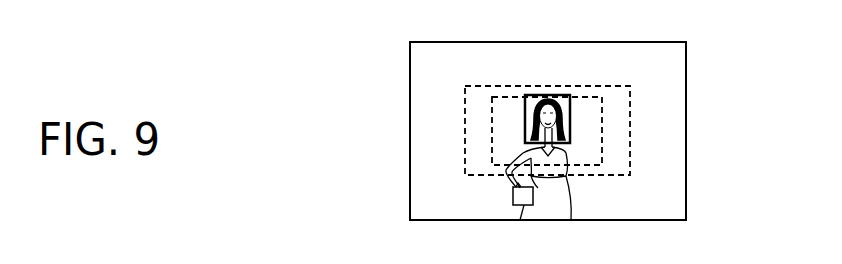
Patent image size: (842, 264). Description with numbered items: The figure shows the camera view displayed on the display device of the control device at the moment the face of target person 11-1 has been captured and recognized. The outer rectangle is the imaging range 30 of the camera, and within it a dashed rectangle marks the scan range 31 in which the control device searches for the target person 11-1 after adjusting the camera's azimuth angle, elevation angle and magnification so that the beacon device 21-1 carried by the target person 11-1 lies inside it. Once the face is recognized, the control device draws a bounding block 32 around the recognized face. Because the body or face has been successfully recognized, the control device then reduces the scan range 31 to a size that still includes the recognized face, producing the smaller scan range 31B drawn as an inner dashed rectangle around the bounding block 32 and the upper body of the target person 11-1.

The imaging range 30 is at (410, 73).
The scan range 31 is at (578, 85).
The reduced scan range 31B is at (602, 127).
The bounding block 32 is at (525, 126).
The target person 11-1 is at (553, 155).
The beacon device 21-1 is at (513, 194).